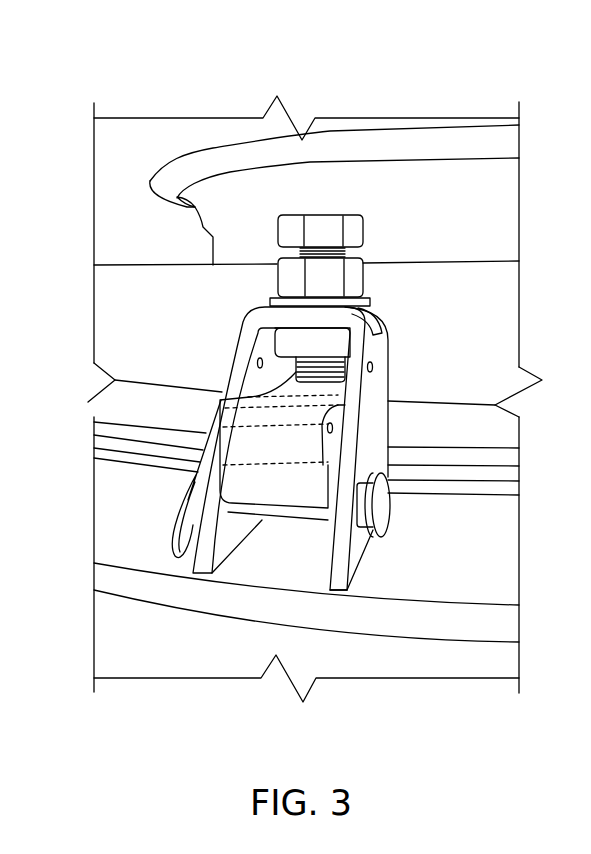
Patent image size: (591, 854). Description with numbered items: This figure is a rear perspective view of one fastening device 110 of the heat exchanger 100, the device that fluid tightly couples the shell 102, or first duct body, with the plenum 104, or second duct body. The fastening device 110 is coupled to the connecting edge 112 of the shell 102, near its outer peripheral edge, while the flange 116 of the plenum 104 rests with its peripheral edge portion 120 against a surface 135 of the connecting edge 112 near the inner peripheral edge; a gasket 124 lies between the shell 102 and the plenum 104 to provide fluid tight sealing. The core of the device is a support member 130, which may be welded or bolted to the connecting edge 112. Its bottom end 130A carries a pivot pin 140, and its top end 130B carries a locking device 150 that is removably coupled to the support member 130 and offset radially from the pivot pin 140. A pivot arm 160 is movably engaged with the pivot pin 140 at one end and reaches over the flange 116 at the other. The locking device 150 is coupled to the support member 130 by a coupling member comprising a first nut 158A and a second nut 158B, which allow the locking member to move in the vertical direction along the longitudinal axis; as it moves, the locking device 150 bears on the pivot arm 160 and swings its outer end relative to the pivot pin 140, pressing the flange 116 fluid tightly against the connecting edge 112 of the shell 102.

The heat exchanger 100 is at (493, 77).
The shell 102 is at (160, 647).
The plenum 104 is at (490, 288).
The fastening device 110 is at (410, 195).
The connecting edge 112 is at (456, 612).
The flange 116 is at (488, 427).
The peripheral edge portion 120 is at (488, 458).
The gasket 124 is at (490, 475).
The support member 130 is at (380, 430).
The bottom end 130A is at (362, 590).
The top end 130B is at (394, 306).
The surface 135 is at (430, 580).
The pivot pin 140 is at (392, 505).
The locking device 150 is at (340, 200).
The first nut 158A is at (278, 277).
The second nut 158B is at (250, 340).
The pivot arm 160 is at (245, 398).